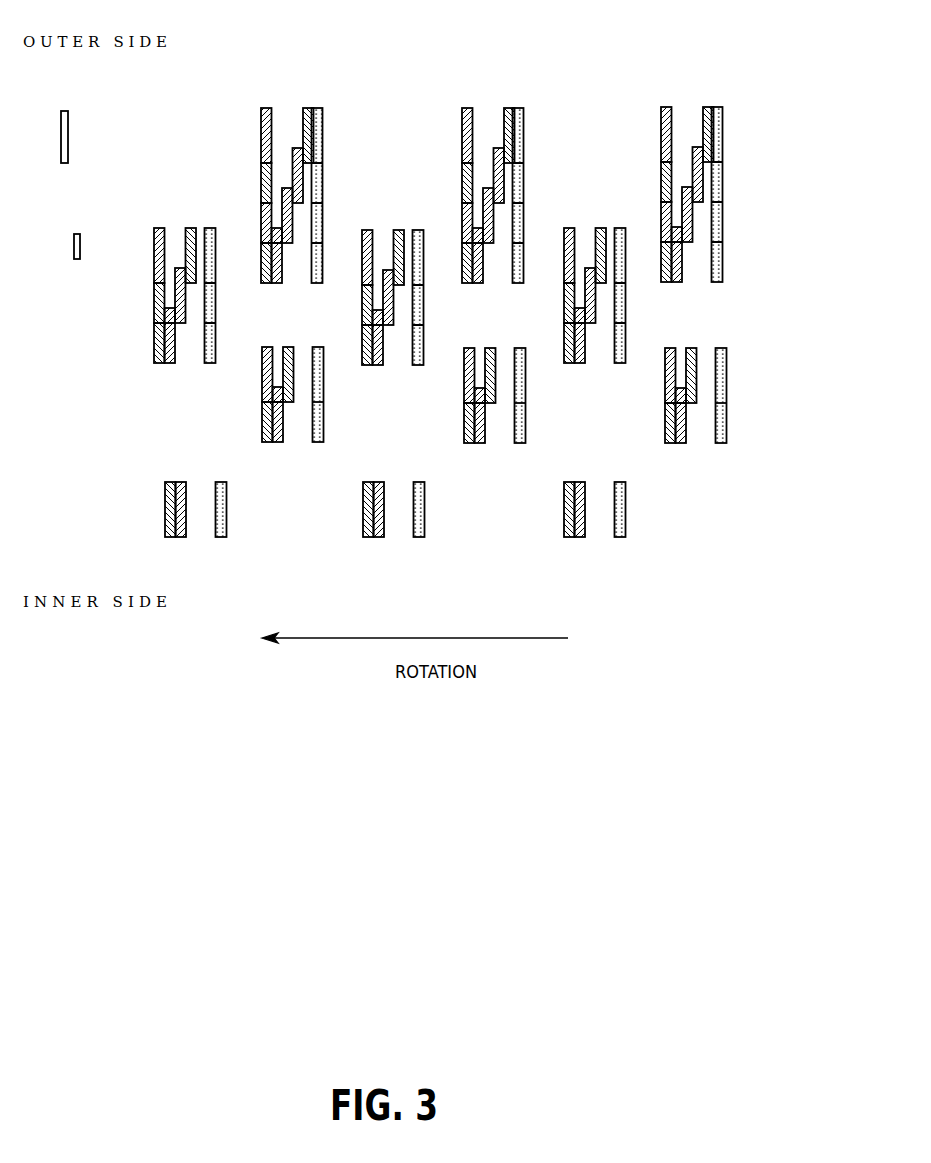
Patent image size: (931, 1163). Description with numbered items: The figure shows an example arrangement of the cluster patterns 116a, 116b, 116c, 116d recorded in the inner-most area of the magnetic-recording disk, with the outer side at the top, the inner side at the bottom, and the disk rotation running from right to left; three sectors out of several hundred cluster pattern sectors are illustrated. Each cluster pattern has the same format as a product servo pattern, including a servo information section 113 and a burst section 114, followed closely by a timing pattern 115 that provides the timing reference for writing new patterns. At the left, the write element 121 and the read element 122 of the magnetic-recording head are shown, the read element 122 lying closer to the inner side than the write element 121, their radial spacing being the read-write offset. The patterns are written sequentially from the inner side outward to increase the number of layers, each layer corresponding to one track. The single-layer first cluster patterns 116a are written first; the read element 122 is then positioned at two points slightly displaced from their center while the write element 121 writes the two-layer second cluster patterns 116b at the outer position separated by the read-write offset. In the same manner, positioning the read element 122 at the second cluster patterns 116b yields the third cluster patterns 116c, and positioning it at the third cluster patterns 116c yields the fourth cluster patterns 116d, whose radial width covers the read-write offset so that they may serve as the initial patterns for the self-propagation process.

The servo information section 113 is at (262, 118).
The burst section 114 is at (317, 290).
The timing pattern 115 is at (321, 116).
The first cluster patterns 116a is at (640, 482).
The second cluster patterns 116b is at (740, 350).
The third cluster patterns 116c is at (629, 235).
The fourth cluster patterns 116d is at (509, 185).
The write element 121 is at (68, 137).
The read element 122 is at (74, 248).